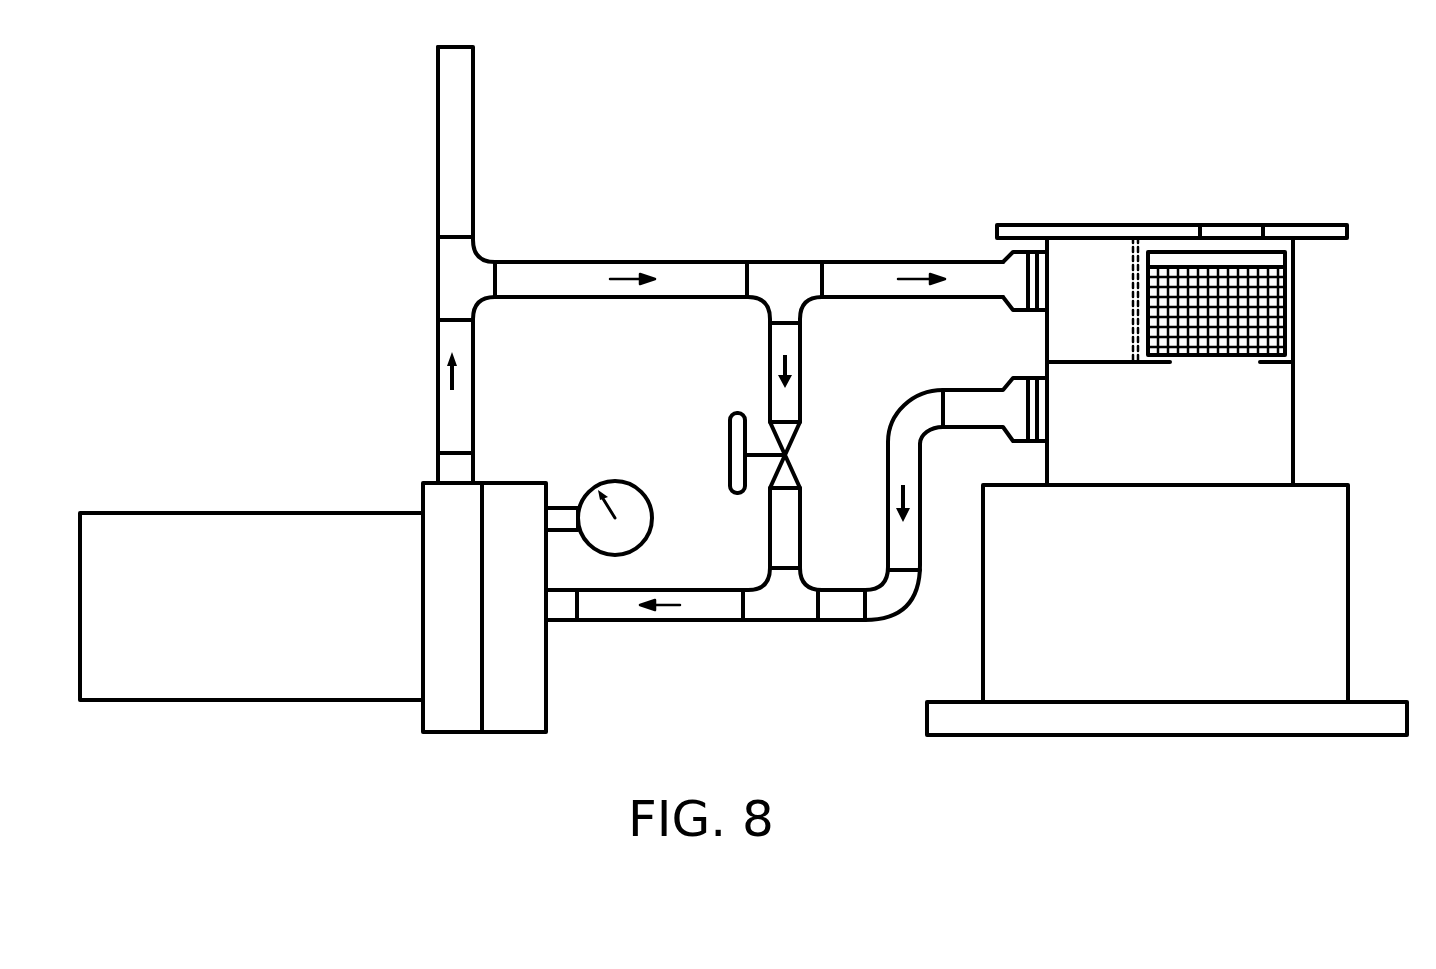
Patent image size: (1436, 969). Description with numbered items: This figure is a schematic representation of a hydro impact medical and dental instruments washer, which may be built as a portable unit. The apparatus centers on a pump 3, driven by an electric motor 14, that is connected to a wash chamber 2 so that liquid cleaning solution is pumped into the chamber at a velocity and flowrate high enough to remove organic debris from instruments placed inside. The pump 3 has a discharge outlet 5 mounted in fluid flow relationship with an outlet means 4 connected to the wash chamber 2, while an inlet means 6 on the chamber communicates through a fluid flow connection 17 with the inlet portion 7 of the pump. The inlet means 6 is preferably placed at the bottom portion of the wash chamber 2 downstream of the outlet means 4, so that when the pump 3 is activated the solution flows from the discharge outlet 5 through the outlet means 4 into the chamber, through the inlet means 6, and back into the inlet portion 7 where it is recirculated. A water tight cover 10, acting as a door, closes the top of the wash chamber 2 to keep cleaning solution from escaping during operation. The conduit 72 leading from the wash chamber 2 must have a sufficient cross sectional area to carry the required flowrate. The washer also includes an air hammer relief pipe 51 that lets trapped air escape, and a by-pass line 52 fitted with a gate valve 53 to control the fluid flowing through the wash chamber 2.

The wash chamber 2 is at (1112, 437).
The pump 3 is at (458, 607).
The outlet means 4 is at (1008, 258).
The discharge outlet 5 is at (480, 467).
The inlet means 6 is at (1008, 420).
The inlet portion 7 is at (560, 612).
The cover 10 is at (1148, 226).
The electric motor 14 is at (260, 607).
The fluid flow connection 17 is at (1270, 285).
The air hammer relief pipe 51 is at (455, 148).
The by-pass line 52 is at (783, 530).
The gate valve 53 is at (792, 450).
The conduit 72 is at (880, 608).